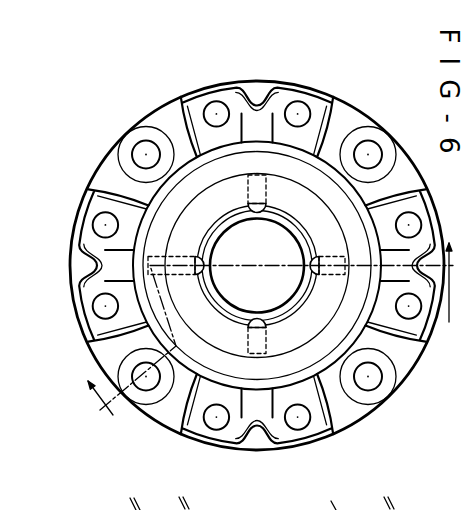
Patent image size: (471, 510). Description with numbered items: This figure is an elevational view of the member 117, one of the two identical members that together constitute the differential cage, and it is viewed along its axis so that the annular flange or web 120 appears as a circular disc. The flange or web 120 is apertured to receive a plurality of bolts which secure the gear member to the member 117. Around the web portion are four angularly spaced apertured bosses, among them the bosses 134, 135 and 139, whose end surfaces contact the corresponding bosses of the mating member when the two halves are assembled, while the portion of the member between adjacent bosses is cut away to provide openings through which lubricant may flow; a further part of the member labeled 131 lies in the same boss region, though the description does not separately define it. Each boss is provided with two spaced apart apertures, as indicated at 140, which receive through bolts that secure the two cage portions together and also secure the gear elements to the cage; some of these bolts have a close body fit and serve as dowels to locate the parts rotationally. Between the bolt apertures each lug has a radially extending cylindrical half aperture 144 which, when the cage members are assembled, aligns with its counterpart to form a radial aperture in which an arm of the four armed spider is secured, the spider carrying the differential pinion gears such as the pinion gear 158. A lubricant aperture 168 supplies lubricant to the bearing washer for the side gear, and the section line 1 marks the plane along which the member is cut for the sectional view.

The member 117 is at (396, 136).
The annular flange or web 120 is at (357, 131).
The mounting boss 131 is at (410, 192).
The apertured boss 134 is at (82, 219).
The apertured boss 135 is at (188, 103).
The apertured boss 139 is at (328, 426).
The aperture 140 is at (333, 190).
The radially extending cylindrical half aperture 144 is at (252, 110).
The differential pinion gear 158 is at (273, 342).
The lubricant aperture 168 is at (300, 192).
The section line 1- 1 is at (266, 340).